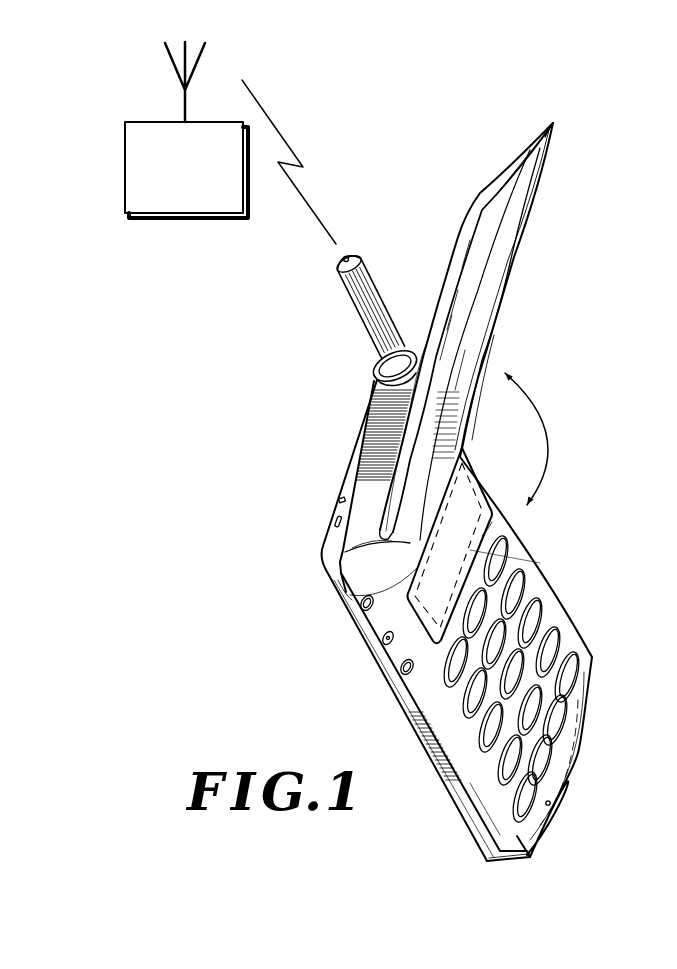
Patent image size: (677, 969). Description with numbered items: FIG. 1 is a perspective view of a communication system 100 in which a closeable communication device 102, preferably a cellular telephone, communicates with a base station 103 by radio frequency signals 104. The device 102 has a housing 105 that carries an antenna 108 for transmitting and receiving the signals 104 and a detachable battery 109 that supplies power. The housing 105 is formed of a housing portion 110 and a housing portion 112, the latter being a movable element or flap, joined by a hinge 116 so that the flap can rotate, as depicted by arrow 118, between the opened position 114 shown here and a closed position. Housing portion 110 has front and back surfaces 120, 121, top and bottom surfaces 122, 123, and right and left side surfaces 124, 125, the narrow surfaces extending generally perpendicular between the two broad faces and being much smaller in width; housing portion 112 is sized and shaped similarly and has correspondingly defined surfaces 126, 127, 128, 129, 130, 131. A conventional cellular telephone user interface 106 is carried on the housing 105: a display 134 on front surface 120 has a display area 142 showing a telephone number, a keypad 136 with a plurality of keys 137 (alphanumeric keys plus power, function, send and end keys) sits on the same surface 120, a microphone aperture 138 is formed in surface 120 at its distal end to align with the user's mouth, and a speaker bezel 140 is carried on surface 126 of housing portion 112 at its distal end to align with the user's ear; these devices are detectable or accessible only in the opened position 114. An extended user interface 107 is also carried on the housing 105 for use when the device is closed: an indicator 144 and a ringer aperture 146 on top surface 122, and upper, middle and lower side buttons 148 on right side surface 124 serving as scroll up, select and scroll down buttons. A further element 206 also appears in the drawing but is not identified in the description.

The communication system 100 is at (414, 113).
The closeable communication device 102 is at (308, 557).
The base station 103 is at (144, 122).
The radio frequency signals 104 is at (287, 139).
The housing 105 is at (338, 582).
The cellular telephone user interface 106 is at (593, 480).
The extended user interface 107 is at (312, 463).
The antenna 108 is at (370, 275).
The battery 109 is at (415, 427).
The housing portion 110 is at (510, 860).
The housing portion 112 is at (536, 136).
The opened position 114 is at (567, 327).
The hinge 116 is at (358, 567).
The arrow 118 is at (552, 425).
The front surface 120 is at (592, 643).
The back surface 121 is at (410, 730).
The top surface 122 is at (367, 438).
The bottom surface 123 is at (540, 837).
The right side surface 124 is at (413, 693).
The left side surface 125 is at (537, 563).
The surface 126 is at (495, 350).
The surface 127 is at (457, 240).
The surface 128 is at (520, 165).
The surface 129 is at (480, 437).
The surface 130 is at (468, 302).
The surface 131 is at (508, 305).
The display 134 is at (482, 537).
The keypad 136 is at (547, 610).
The keys 137 is at (563, 727).
The microphone aperture 138 is at (560, 805).
The speaker bezel 140 is at (512, 262).
The display area 142 is at (477, 490).
The indicator 144 is at (340, 498).
The ringer aperture 146 is at (336, 518).
The side buttons 148 is at (398, 663).
The speaker port 206 is at (497, 790).